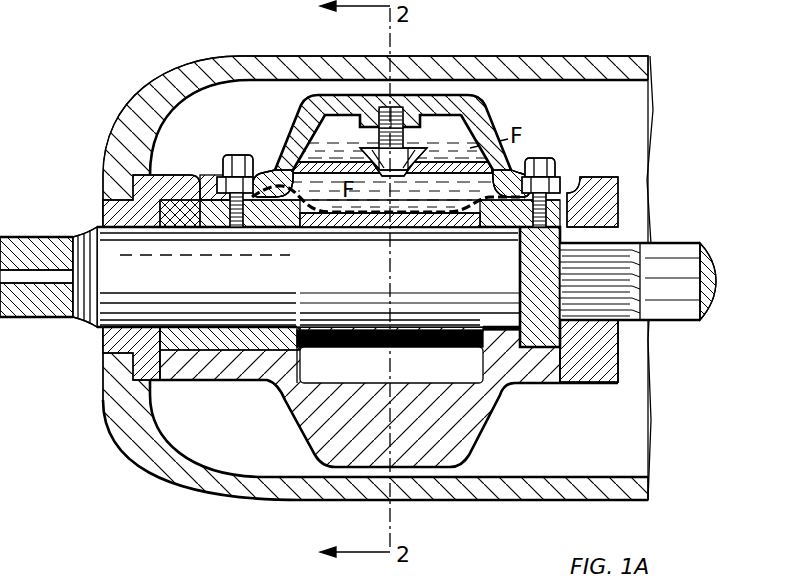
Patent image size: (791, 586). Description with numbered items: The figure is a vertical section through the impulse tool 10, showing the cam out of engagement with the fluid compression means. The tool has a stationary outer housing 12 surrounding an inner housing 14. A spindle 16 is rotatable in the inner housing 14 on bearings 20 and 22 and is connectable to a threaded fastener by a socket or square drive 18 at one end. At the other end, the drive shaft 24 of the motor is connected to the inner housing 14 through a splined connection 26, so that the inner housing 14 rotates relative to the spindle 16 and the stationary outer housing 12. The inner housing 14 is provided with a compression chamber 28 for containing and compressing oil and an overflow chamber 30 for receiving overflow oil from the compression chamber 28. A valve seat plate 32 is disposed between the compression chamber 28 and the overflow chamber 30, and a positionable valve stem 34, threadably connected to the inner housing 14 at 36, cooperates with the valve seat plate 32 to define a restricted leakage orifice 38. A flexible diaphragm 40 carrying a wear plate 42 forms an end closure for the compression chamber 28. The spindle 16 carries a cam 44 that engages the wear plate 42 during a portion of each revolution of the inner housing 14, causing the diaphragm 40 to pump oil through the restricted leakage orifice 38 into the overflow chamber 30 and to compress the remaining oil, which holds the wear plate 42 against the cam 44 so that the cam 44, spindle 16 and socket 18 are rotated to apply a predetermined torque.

The impulse tool 10 is at (551, 144).
The stationary outer housing 12 is at (137, 440).
The inner housing 14 is at (387, 132).
The spindle 16 is at (200, 284).
The socket 18 is at (27, 253).
The bearing 20 is at (123, 210).
The bearing 22 is at (537, 333).
The drive shaft 24 is at (683, 260).
The splined connection 26 is at (620, 318).
The compression chamber 28 is at (450, 203).
The overflow chamber 30 is at (323, 123).
The valve seat plate 32 is at (277, 170).
The valve stem 34 is at (397, 107).
The threaded connection 36 is at (379, 117).
The restricted leakage orifice 38 is at (403, 170).
The diaphragm 40 is at (320, 213).
The wear plate 42 is at (363, 222).
The cam 44 is at (327, 348).